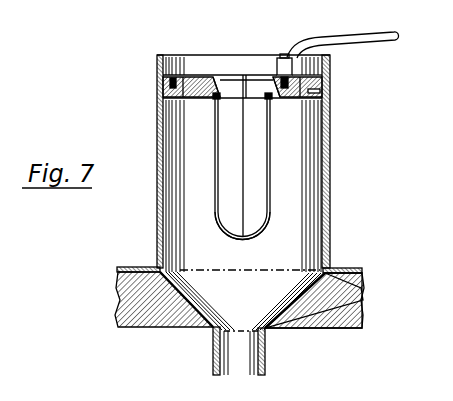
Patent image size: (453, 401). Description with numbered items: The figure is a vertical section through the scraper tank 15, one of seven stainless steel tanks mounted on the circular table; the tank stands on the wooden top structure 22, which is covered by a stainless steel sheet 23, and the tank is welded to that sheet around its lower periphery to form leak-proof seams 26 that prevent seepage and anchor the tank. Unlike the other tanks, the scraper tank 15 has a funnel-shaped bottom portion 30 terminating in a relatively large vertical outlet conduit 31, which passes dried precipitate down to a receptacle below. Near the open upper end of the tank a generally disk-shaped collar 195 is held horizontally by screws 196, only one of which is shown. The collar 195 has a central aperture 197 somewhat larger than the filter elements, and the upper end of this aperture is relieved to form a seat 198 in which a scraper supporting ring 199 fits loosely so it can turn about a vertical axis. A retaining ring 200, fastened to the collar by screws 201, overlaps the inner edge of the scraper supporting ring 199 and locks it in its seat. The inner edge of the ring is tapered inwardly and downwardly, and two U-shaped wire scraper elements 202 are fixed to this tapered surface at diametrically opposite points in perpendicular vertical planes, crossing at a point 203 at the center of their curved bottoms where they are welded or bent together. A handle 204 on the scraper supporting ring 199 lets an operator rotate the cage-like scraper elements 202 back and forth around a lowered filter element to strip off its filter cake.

The scraper tank 15 is at (334, 168).
The top structure 22 is at (330, 328).
The stainless steel sheet 23 is at (345, 268).
The leak-proof seams 26 is at (158, 267).
The conical bore 30 is at (183, 297).
The outlet conduit 31 is at (216, 357).
The collar 195 is at (300, 106).
The screws 196 is at (326, 92).
The central aperture 197 is at (223, 100).
The seat 198 is at (175, 98).
The scraper supporting ring 199 is at (202, 80).
The retaining ring 200 is at (183, 78).
The screws 201 is at (170, 82).
The scraper elements 202 is at (270, 192).
The intersection point 203 is at (237, 241).
The handle 204 is at (372, 43).